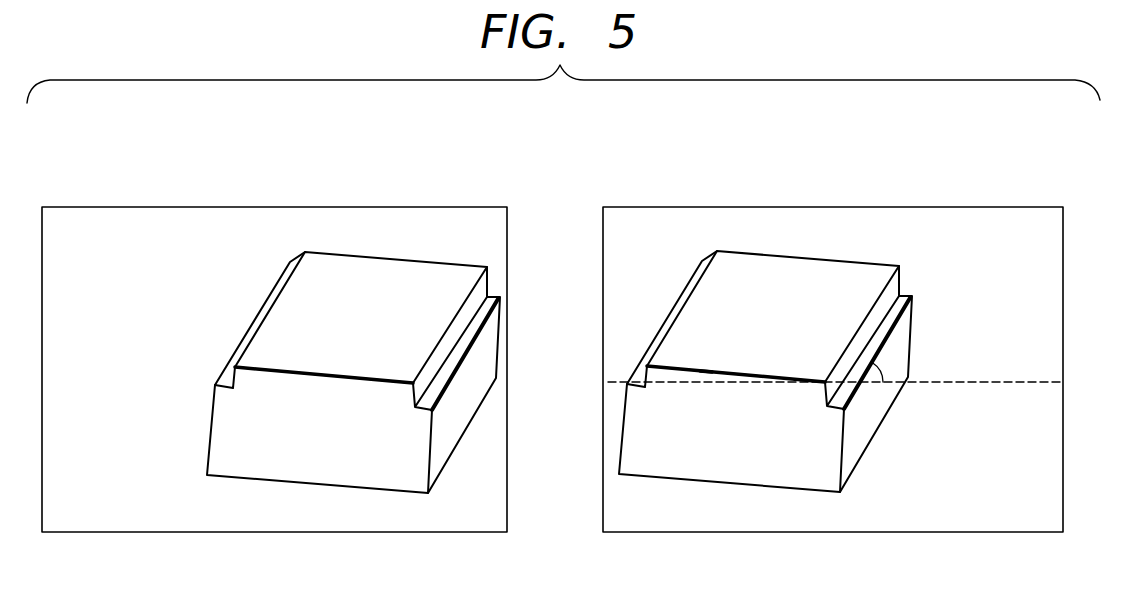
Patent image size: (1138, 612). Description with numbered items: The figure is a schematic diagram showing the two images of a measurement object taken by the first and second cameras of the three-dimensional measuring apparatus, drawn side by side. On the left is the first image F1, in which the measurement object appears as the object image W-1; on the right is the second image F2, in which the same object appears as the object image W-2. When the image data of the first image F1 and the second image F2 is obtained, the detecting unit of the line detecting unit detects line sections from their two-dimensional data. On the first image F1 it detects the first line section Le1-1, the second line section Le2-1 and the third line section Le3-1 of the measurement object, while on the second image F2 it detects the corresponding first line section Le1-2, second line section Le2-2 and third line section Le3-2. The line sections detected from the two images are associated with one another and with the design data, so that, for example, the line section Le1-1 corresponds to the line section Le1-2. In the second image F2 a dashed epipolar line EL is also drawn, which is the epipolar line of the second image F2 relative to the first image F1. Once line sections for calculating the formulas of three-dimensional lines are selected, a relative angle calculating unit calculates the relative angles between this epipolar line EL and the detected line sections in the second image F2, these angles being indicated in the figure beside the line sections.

The first image F1 is at (113, 207).
The measurement object on first image W-1 is at (303, 250).
The first line section on first image Le1-1 is at (453, 382).
The second line section on first image Le2-1 is at (290, 368).
The third line section on first image Le3-1 is at (423, 452).
The second image F2 is at (1037, 207).
The measurement object on second image W-2 is at (757, 242).
The first line section on second image Le1-2 is at (850, 398).
The second line section on second image Le2-2 is at (737, 373).
The third line section on second image Le3-2 is at (837, 452).
The epipolar line EL is at (1022, 382).